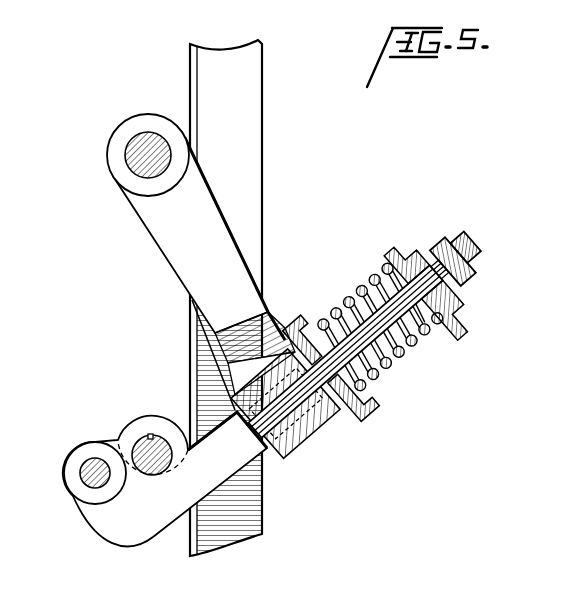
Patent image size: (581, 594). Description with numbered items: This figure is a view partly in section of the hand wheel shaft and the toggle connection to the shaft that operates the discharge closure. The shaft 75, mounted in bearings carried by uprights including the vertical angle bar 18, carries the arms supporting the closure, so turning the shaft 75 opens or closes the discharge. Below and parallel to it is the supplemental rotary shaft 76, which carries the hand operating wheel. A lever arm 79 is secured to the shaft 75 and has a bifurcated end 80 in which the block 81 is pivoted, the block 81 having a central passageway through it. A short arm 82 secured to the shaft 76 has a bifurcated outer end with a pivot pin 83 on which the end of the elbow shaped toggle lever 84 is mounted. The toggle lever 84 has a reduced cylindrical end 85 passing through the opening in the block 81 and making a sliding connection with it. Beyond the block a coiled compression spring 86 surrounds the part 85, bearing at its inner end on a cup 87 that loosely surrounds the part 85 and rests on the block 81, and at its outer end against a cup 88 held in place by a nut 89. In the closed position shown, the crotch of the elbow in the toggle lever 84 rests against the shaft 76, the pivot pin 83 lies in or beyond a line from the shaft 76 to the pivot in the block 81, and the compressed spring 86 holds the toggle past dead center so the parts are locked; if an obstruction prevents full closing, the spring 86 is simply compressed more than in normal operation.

The vertical angle bar 18 is at (248, 188).
The shaft 75 is at (127, 156).
The supplemental rotary shaft 76 is at (153, 437).
The lever arm 79 is at (233, 258).
The bifurcated end 80 is at (280, 332).
The block 81 is at (308, 417).
The short arm 82 is at (112, 435).
The pivot pin 83 is at (84, 467).
The toggle lever 84 is at (130, 520).
The reduced cylindrical end 85 is at (348, 340).
The coiled compression spring 86 is at (398, 358).
The cup 87 is at (350, 405).
The cup 88 is at (455, 327).
The nut 89 is at (458, 283).